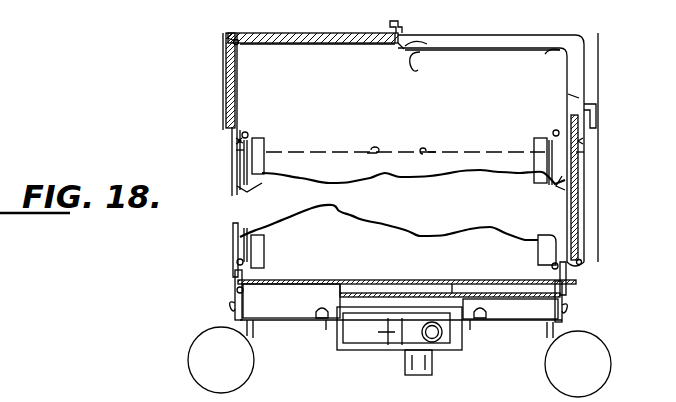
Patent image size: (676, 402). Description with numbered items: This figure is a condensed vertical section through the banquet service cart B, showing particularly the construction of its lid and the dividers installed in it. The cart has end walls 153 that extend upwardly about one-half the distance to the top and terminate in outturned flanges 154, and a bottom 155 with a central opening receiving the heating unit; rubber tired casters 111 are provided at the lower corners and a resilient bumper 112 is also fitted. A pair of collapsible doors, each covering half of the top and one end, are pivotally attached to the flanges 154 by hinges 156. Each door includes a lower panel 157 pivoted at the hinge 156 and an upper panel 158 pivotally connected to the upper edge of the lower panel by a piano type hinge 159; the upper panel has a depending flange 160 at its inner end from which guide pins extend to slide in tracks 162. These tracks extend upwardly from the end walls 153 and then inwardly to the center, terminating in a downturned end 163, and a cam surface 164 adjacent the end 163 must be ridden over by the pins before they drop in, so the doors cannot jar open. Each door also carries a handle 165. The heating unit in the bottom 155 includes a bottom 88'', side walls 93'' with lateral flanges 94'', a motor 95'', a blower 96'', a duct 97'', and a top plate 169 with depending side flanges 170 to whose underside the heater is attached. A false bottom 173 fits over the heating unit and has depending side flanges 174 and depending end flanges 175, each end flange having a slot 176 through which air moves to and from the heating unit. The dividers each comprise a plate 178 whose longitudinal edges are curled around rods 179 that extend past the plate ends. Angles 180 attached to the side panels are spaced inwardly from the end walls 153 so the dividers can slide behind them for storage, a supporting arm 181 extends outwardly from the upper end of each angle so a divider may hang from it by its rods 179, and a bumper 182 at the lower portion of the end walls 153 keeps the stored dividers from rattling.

The banquet service cart B is at (588, 52).
The upper panel 158 is at (299, 32).
The lower panel 157 is at (226, 72).
The piano type hinge 159 is at (238, 44).
The tracks 162 is at (345, 44).
The handle 165 is at (383, 26).
The cam surface 164 is at (402, 47).
The depending flange 160 is at (402, 52).
The downturned end 163 is at (413, 64).
The rods 179 is at (244, 128).
The supporting arm 181 is at (252, 130).
The angles 180 is at (264, 143).
The plate 178 is at (353, 151).
The hinges 156 is at (236, 140).
The outturned flanges 154 is at (240, 152).
The end walls 153 is at (236, 190).
The bumper 182 is at (237, 265).
The false bottom 173 is at (289, 282).
The top plate 169 is at (404, 292).
The depending side flanges 170 is at (350, 290).
The depending front and rear end flanges 175 is at (494, 298).
The slot 176 is at (318, 300).
The depending side flanges 174 is at (235, 290).
The resilient bumper 112 is at (232, 305).
The blower 96'' is at (375, 331).
The bottom 88'' is at (399, 341).
The duct 97'' is at (446, 348).
The motor 95'' is at (420, 375).
The lateral flanges 94'' is at (393, 336).
The side walls 93'' is at (418, 352).
The bottom 155 is at (254, 328).
The rubber tired casters 111 is at (205, 384).